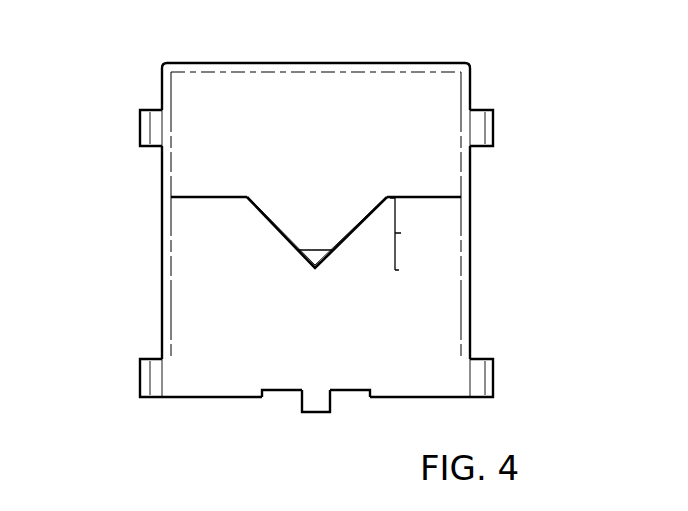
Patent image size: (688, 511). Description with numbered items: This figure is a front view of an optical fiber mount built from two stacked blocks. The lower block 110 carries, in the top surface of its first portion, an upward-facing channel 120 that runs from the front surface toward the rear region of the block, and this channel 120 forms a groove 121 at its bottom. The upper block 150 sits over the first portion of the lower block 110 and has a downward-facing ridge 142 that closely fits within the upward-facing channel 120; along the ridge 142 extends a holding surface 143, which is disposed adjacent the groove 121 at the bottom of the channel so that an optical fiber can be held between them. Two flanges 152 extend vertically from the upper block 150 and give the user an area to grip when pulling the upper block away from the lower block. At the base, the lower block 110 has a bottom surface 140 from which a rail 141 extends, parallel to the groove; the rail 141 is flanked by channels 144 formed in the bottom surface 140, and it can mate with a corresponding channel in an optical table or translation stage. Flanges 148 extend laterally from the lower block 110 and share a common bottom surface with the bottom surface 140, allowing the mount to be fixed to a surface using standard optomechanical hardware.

The lower block 110 is at (334, 355).
The upward-facing channel 120 is at (418, 234).
The groove 121 is at (329, 269).
The bottom surface 140 is at (203, 397).
The rail 141 is at (318, 407).
The downward-facing ridge 142 is at (321, 231).
The holding surface 143 is at (318, 247).
The channels 144 is at (284, 400).
The flanges 148 is at (156, 378).
The upper block 150 is at (341, 124).
The flanges 152 is at (146, 134).